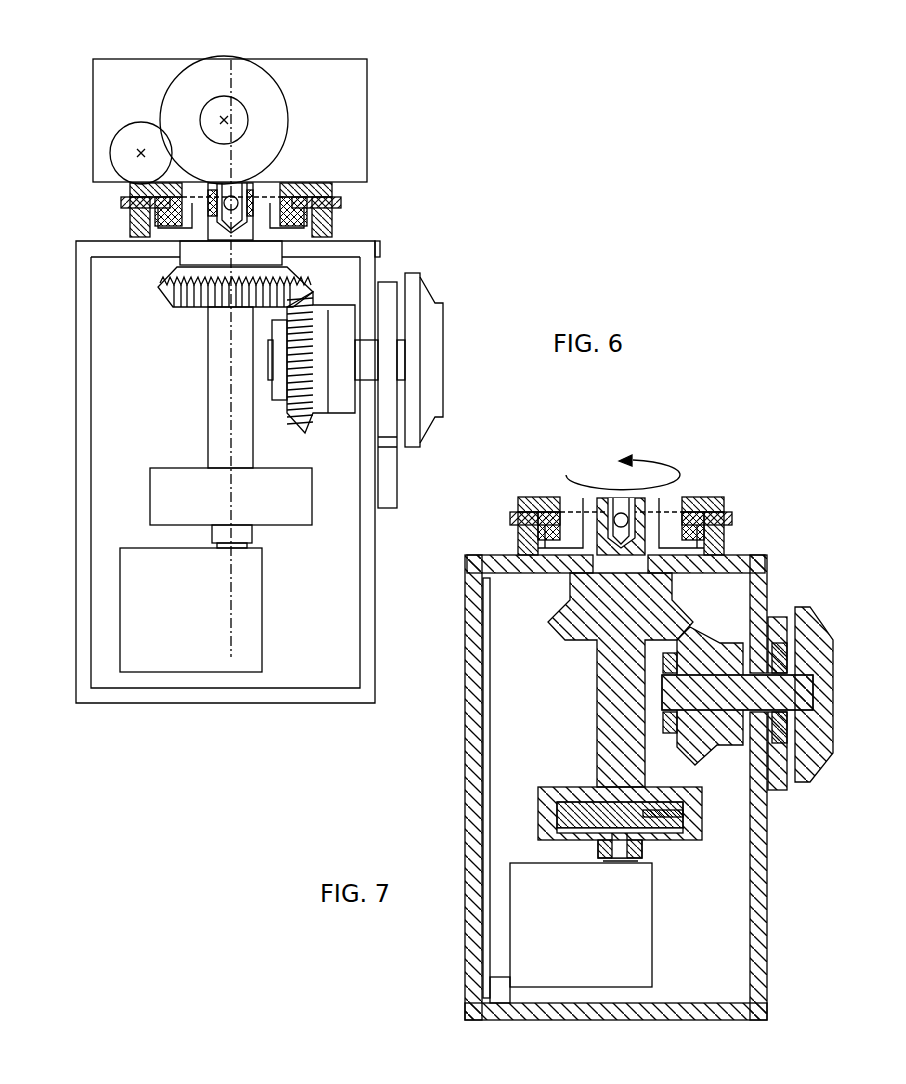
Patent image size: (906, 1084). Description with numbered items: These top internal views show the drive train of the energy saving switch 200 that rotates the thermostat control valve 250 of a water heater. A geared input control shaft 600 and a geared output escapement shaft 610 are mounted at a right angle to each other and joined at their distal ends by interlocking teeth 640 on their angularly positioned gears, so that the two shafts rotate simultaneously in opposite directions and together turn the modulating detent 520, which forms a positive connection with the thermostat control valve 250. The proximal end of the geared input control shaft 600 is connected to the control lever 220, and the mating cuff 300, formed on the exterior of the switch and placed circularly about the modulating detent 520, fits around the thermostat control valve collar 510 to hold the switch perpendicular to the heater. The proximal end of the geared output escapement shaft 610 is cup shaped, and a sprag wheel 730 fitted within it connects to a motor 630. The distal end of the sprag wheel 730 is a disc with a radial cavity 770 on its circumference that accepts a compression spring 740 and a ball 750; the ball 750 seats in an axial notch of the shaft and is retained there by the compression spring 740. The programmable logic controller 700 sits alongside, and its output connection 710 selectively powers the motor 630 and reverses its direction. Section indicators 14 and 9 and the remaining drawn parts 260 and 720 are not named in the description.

In FIG. 6, the energy saving switch 200 is at (75, 257).
In FIG. 6, the control lever 220 is at (388, 505).
In FIG. 6, the thermostat control valve 250 is at (309, 70).
In FIG. 6, the conical wheel 260 is at (429, 320).
In FIG. 6, the mating cuff 300 is at (325, 223).
In FIG. 6, the thermostat control valve collar 510 is at (300, 193).
In FIG. 6, the modulating detent 520 is at (242, 200).
In FIG. 6, the geared input control shaft 600 is at (340, 310).
In FIG. 6, the geared output escapement shaft 610 is at (207, 407).
In FIG. 7, the geared output escapement shaft 610 is at (598, 688).
In FIG. 6, the motor 630 is at (175, 662).
In FIG. 7, the motor 630 is at (632, 980).
In FIG. 6, the interlocking teeth 640 is at (287, 307).
In FIG. 7, the programmable logic controller 700 is at (488, 935).
In FIG. 7, the output connection 710 is at (502, 980).
In FIG. 7, the coupling 720 is at (642, 852).
In FIG. 7, the sprag wheel 730 is at (557, 813).
In FIG. 7, the compression spring 740 is at (660, 808).
In FIG. 7, the ball 750 is at (687, 828).
In FIG. 7, the radial cavity 770 is at (655, 813).
In FIG. 7, the section line 14 is at (507, 518).
In FIG. 7, the section line 9 is at (777, 605).